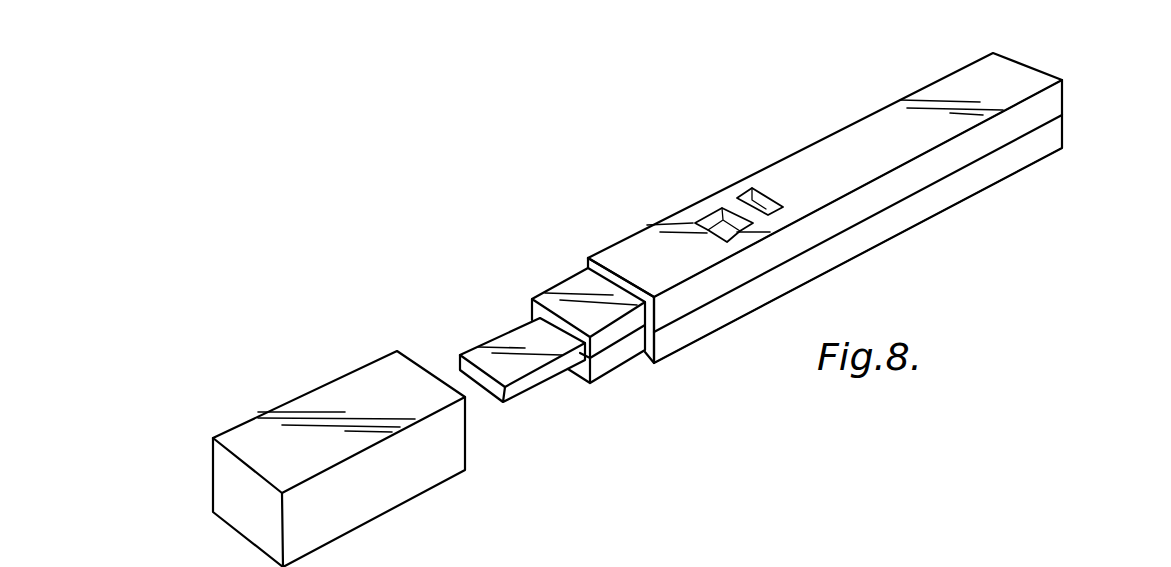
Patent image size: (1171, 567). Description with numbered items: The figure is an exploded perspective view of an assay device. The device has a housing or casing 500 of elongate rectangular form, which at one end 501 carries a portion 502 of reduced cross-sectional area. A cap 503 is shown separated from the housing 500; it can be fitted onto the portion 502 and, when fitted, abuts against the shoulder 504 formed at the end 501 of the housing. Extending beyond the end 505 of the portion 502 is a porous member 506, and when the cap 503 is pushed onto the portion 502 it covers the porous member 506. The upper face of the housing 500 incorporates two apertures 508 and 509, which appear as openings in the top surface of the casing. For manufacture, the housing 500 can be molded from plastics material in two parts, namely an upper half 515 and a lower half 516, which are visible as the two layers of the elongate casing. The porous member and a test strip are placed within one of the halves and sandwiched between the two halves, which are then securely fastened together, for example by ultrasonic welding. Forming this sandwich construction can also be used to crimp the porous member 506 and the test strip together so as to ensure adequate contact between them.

The housing 500 is at (960, 183).
The end of housing 501 is at (587, 262).
The portion of reduced cross-sectional area 502 is at (560, 292).
The cap 503 is at (315, 402).
The shoulder 504 is at (651, 355).
The end of portion 505 is at (583, 377).
The porous member 506 is at (538, 380).
The aperture 508 is at (708, 220).
The aperture 509 is at (763, 202).
The upper half of housing 515 is at (1058, 98).
The lower half of housing 516 is at (1057, 128).